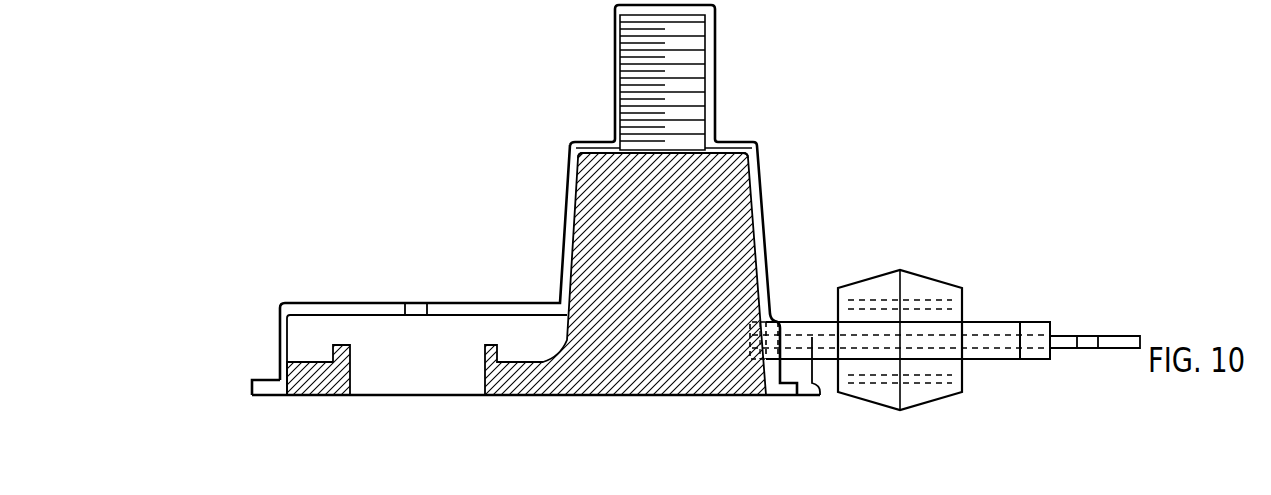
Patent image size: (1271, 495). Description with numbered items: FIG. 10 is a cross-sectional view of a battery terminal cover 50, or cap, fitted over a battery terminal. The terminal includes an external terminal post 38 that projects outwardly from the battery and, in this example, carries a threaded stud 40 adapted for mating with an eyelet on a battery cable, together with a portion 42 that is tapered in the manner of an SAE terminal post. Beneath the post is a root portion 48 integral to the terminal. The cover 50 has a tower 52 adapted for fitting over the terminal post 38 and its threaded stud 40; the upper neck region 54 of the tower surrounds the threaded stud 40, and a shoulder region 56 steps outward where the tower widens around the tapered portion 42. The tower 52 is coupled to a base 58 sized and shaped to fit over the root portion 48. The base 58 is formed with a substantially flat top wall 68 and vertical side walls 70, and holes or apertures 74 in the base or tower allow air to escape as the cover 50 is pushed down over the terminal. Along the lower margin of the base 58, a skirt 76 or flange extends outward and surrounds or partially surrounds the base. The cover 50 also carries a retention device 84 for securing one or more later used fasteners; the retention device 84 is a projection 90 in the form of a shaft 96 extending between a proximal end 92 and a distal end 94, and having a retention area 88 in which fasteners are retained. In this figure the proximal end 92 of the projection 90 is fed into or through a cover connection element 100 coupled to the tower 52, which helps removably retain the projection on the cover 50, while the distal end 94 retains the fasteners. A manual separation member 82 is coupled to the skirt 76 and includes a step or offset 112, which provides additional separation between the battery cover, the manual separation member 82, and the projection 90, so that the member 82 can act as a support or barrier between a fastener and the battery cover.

The external terminal post 38 is at (648, 259).
The threaded stud 40 is at (698, 62).
The tapered portion 42 is at (605, 202).
The root portion 48 is at (318, 370).
The battery terminal cover 50 is at (518, 221).
The tower 52 is at (767, 240).
The housing neck 54 is at (713, 28).
The housing shoulder 56 is at (756, 156).
The base 58 is at (313, 300).
The top wall 68 is at (383, 308).
The vertical side walls 70 is at (282, 368).
The apertures 74 is at (415, 306).
The skirt 76 is at (266, 388).
The manual separation member 82 is at (1127, 340).
The retention device 84 is at (928, 331).
The retention area 88 is at (943, 350).
The projection 90 is at (1002, 328).
The proximal end 92 is at (788, 322).
The distal end 94 is at (1050, 322).
The shaft 96 is at (874, 330).
The cover connection element 100 is at (758, 352).
The offset 112 is at (815, 380).